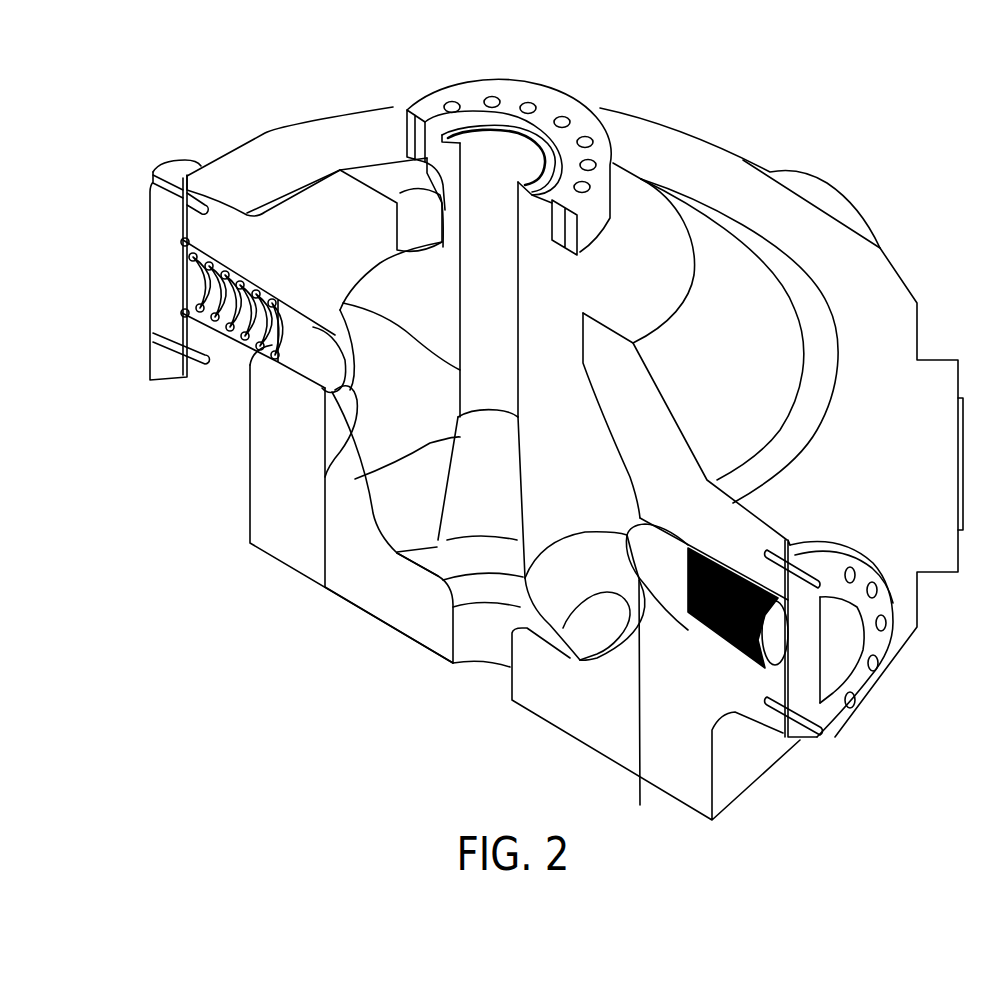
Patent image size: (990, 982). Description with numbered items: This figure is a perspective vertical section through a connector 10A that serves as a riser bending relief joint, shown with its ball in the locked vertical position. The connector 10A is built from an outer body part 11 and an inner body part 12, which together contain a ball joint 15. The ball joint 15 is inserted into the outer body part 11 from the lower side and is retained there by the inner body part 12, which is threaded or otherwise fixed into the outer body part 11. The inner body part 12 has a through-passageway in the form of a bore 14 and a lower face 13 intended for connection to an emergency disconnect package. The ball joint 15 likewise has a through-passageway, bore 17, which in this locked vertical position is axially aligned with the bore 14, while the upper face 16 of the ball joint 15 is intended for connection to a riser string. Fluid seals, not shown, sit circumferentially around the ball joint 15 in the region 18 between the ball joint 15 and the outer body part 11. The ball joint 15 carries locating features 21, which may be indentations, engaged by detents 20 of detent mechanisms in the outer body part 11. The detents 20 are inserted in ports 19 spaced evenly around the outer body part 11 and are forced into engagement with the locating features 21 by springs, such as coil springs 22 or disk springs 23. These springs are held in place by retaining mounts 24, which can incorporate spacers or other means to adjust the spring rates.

The connector 10A is at (872, 186).
The outer body part 11 is at (262, 517).
The inner body part 12 is at (388, 616).
The lower face 13 is at (420, 647).
The bore 14 is at (470, 638).
The ball joint 15 is at (378, 305).
The upper face 16 is at (407, 106).
The bore 17 is at (475, 313).
The region 18 is at (460, 370).
The ports 19 is at (215, 370).
The detents 20 is at (310, 353).
The locating features 21 is at (375, 375).
The coil springs 22 is at (207, 292).
The disk springs 23 is at (639, 706).
The retaining mounts 24 is at (153, 259).